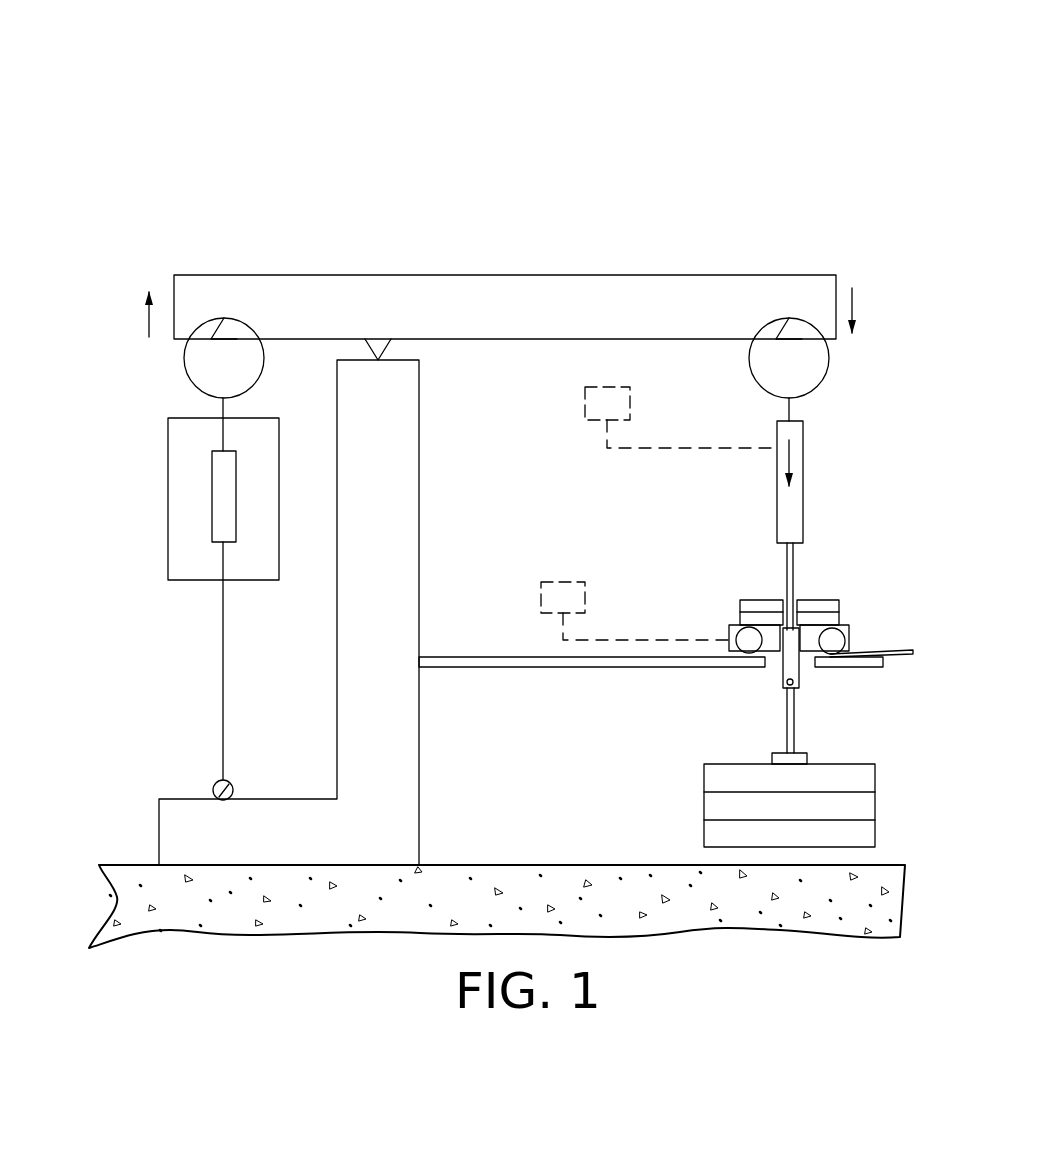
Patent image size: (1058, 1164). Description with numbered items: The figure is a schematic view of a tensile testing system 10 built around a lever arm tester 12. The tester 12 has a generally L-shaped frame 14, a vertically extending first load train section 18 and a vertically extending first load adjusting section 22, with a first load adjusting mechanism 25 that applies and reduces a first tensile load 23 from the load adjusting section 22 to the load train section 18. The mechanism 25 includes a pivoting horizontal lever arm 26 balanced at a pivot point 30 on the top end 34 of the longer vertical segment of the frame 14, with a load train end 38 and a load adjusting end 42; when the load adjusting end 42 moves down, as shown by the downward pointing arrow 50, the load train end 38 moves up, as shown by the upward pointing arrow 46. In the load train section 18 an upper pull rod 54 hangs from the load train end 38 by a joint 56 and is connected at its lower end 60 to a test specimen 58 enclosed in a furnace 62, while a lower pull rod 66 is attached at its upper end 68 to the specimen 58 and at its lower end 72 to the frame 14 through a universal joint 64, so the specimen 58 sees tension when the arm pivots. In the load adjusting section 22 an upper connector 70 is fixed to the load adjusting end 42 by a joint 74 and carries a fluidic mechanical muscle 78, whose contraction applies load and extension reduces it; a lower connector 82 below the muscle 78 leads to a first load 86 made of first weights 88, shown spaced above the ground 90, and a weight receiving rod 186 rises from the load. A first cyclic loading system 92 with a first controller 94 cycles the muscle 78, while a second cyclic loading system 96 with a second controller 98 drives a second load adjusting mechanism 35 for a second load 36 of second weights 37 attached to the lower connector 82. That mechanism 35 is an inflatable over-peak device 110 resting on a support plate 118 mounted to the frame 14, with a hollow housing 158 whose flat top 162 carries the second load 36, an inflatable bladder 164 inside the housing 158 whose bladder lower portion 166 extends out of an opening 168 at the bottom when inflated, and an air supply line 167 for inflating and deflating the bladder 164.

The tensile testing system 10 is at (505, 86).
The lever arm tester 12 is at (413, 173).
The frame 14 is at (437, 516).
The first load train section 18 is at (138, 432).
The first load adjusting section 22 is at (812, 487).
The first tensile load 23 is at (793, 455).
The first load adjusting mechanism 25 is at (803, 525).
The lever arm 26 is at (577, 275).
The pivot point 30 is at (392, 342).
The top end 34 is at (350, 354).
The second load adjusting mechanism 35 is at (820, 692).
The second load 36 is at (832, 590).
The second weights 37 is at (744, 593).
The load train end 38 is at (229, 260).
The load adjusting end 42 is at (794, 260).
The upward pointing arrow 46 is at (149, 330).
The downward pointing arrow 50 is at (852, 300).
The upper pull rod 54 is at (223, 405).
The joint 56 is at (181, 368).
The test specimen 58 is at (223, 512).
The lower end 60 is at (223, 452).
The furnace 62 is at (153, 541).
The universal joint 64 is at (216, 783).
The lower pull rod 66 is at (223, 598).
The upper end 68 is at (223, 542).
The upper connector 70 is at (792, 410).
The lower end 72 is at (231, 785).
The joint 74 is at (748, 372).
The fluidic mechanical muscle 78 is at (777, 480).
The lower connector 82 is at (797, 565).
The first load 86 is at (693, 800).
The first weights 88 is at (868, 772).
The ground 90 is at (560, 853).
The first cyclic loading system 92 is at (686, 371).
The first controller 94 is at (623, 415).
The second cyclic loading system 96 is at (590, 506).
The second controller 98 is at (578, 609).
The inflatable over-peak device 110 is at (727, 708).
The support plate 118 is at (518, 657).
The hollow housing 158 is at (847, 645).
The flat top 162 is at (740, 606).
The inflatable bladder 164 is at (840, 620).
The bladder lower portion 166 is at (745, 652).
The air supply line 167 is at (900, 654).
The opening 168 is at (820, 652).
The weight receiving rod 186 is at (786, 570).